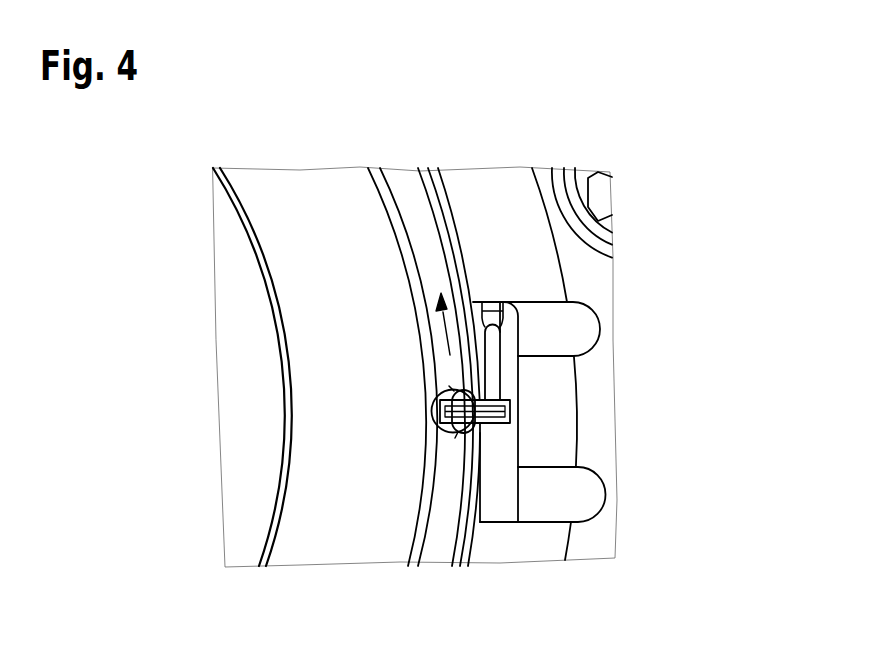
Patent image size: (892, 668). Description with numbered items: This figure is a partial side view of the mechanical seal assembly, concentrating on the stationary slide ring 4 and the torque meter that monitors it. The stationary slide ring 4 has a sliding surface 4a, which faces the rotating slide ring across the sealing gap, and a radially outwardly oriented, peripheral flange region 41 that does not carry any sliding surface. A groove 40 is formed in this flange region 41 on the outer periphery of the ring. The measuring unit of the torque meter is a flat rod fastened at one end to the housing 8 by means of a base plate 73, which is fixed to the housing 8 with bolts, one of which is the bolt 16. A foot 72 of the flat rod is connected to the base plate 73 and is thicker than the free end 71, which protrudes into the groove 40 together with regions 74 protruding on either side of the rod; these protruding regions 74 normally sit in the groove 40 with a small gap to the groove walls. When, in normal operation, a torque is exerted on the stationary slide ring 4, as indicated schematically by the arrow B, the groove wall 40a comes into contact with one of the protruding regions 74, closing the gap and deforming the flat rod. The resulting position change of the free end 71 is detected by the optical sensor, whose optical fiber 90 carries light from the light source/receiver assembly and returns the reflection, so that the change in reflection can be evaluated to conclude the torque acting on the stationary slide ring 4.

The stationary slide ring 4 is at (365, 561).
The sliding surface 4a is at (355, 183).
The housing 8 is at (464, 194).
The bolt 16 is at (597, 190).
The groove 40 is at (433, 410).
The groove wall 40a is at (492, 417).
The flange region 41 is at (433, 546).
The free end 71 is at (443, 389).
The foot 72 is at (512, 403).
The base plate 73 is at (504, 483).
The protruding regions 74 is at (449, 386).
The optical fiber 90 is at (493, 369).
The arrow B is at (445, 332).